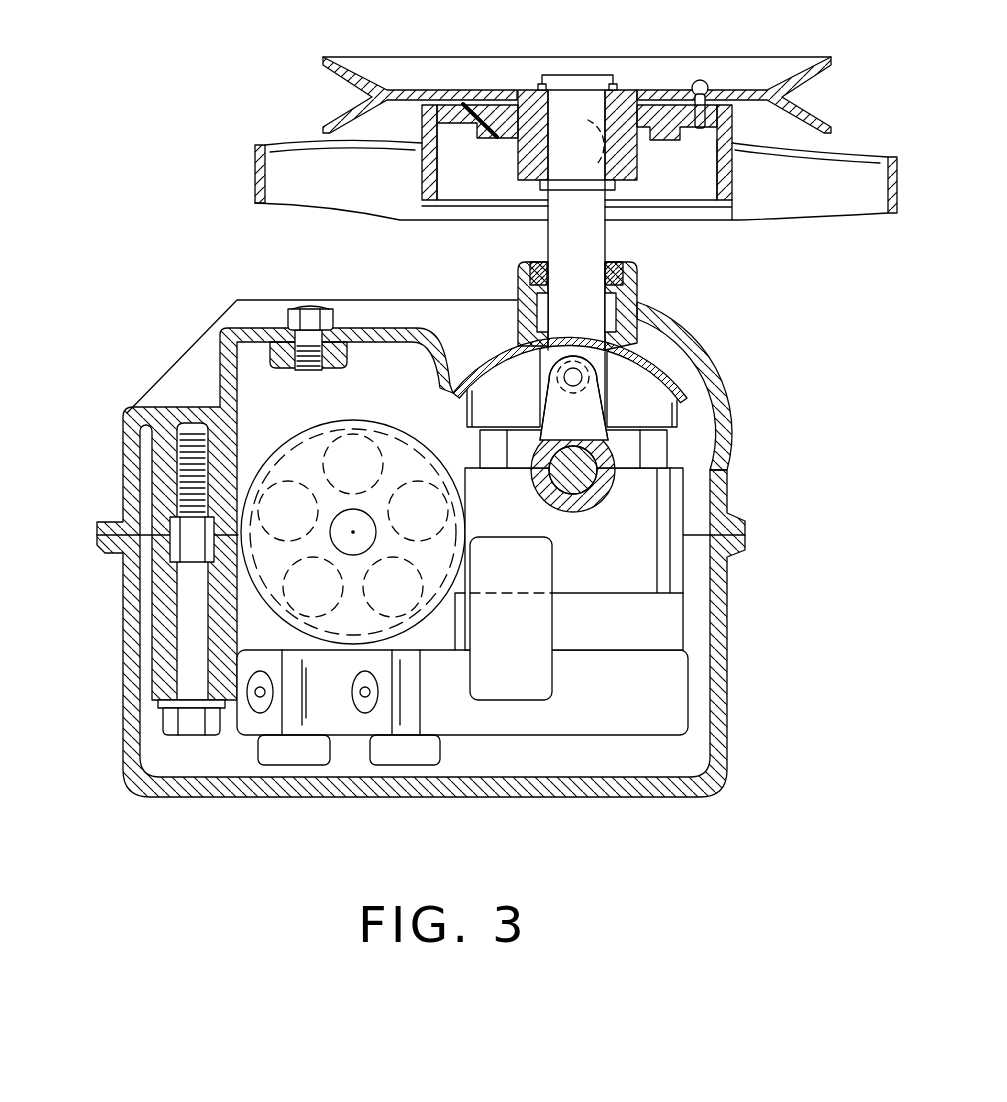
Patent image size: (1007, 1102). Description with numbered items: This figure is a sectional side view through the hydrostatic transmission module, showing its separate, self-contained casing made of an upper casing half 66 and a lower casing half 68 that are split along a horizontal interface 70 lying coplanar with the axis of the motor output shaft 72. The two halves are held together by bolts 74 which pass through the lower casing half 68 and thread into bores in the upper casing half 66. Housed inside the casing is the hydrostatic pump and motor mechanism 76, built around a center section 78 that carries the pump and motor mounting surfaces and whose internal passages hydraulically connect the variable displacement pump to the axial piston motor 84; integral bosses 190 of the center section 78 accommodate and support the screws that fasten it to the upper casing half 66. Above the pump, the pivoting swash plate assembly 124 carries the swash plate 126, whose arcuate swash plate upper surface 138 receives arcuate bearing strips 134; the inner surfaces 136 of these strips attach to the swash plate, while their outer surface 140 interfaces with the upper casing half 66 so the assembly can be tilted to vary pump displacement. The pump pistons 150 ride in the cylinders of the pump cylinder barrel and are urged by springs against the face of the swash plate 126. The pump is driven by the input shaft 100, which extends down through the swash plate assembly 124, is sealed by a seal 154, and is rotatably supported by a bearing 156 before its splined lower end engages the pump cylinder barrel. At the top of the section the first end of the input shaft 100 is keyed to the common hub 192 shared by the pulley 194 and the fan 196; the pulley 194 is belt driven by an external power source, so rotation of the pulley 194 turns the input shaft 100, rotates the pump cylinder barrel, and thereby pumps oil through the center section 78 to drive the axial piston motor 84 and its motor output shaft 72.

The upper casing half 66 is at (125, 487).
The lower casing half 68 is at (126, 588).
The horizontal interface 70 is at (745, 535).
The motor output shaft 72 is at (355, 522).
The bolts 74 is at (173, 730).
The hydrostatic pump and motor mechanism 76 is at (336, 398).
The center section 78 is at (668, 690).
The axial piston motor 84 is at (300, 430).
The input shaft 100 is at (594, 236).
The swash plate assembly 124 is at (655, 400).
The swash plate 126 is at (643, 389).
The arcuate bearing strips 134 is at (685, 395).
The inner surfaces 136 is at (655, 345).
The swash plate upper surface 138 is at (525, 420).
The outer surface 140 is at (628, 325).
The pistons 150 is at (527, 455).
The seal 154 is at (620, 262).
The bearing 156 is at (543, 317).
The integral bosses 190 is at (167, 650).
The common hub 192 is at (532, 100).
The pulley 194 is at (757, 72).
The fan 196 is at (851, 200).